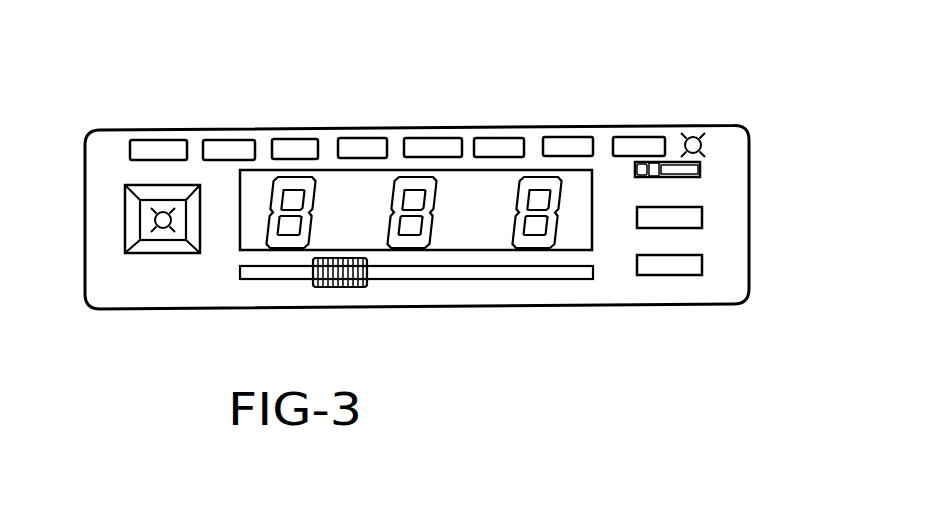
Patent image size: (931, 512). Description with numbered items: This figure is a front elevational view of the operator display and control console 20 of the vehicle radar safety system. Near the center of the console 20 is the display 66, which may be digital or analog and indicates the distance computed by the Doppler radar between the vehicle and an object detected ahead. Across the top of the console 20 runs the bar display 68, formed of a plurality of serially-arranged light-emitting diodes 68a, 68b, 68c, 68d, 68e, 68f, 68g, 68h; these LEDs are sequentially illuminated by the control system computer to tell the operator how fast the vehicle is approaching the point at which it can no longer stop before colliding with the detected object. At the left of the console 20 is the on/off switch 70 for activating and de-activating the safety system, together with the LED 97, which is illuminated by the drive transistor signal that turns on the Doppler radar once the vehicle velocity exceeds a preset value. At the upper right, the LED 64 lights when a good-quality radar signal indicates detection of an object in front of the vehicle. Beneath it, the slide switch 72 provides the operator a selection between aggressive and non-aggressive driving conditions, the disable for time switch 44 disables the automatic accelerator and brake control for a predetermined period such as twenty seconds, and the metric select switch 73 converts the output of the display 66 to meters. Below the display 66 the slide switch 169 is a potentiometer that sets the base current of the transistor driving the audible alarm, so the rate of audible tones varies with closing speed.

The operator display and control console 20 is at (430, 45).
The bar display 68 is at (135, 96).
The light-emitting diode 68a is at (136, 148).
The light-emitting diode 68b is at (210, 147).
The light-emitting diode 68c is at (282, 144).
The light-emitting diode 68d is at (353, 144).
The light-emitting diode 68e is at (433, 142).
The light-emitting diode 68f is at (497, 142).
The light-emitting diode 68g is at (557, 141).
The light-emitting diode 68h is at (625, 139).
The LED 64 is at (693, 134).
The slide switch 72 is at (704, 165).
The disable for time switch 44 is at (702, 218).
The metric select switch 73 is at (702, 265).
The display 66 is at (334, 185).
The slide switch 169 is at (512, 277).
The LED 97 is at (150, 215).
The on/off switch 70 is at (163, 238).